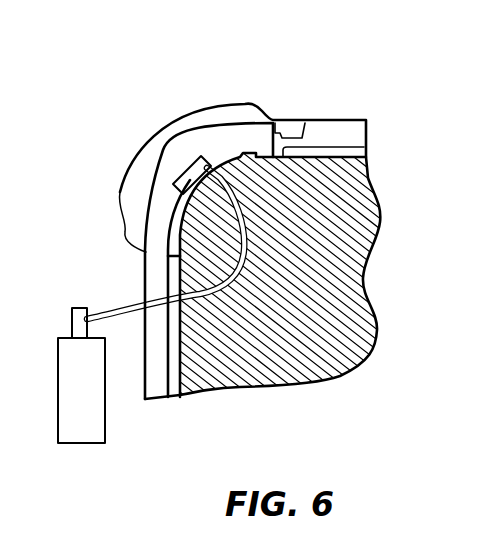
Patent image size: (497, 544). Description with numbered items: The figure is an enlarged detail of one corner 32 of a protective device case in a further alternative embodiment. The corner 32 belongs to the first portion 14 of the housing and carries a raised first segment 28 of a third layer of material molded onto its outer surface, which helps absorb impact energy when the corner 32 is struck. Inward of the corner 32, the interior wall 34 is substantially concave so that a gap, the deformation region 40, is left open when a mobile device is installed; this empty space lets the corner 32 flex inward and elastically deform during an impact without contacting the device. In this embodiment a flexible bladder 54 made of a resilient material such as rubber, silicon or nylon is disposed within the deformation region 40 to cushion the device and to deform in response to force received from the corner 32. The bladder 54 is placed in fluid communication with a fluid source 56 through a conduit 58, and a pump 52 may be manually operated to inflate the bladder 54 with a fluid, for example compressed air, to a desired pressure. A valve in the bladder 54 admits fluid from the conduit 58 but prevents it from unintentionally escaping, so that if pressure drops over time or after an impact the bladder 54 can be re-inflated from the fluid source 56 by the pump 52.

The first portion 14 is at (243, 272).
The first segment 28 is at (210, 226).
The corner 32 is at (118, 109).
The interior wall 34 is at (147, 249).
The deformation region 40 is at (233, 158).
The pump 52 is at (181, 172).
The flexible bladder 54 is at (172, 208).
The fluid source 56 is at (94, 409).
The conduit 58 is at (128, 314).